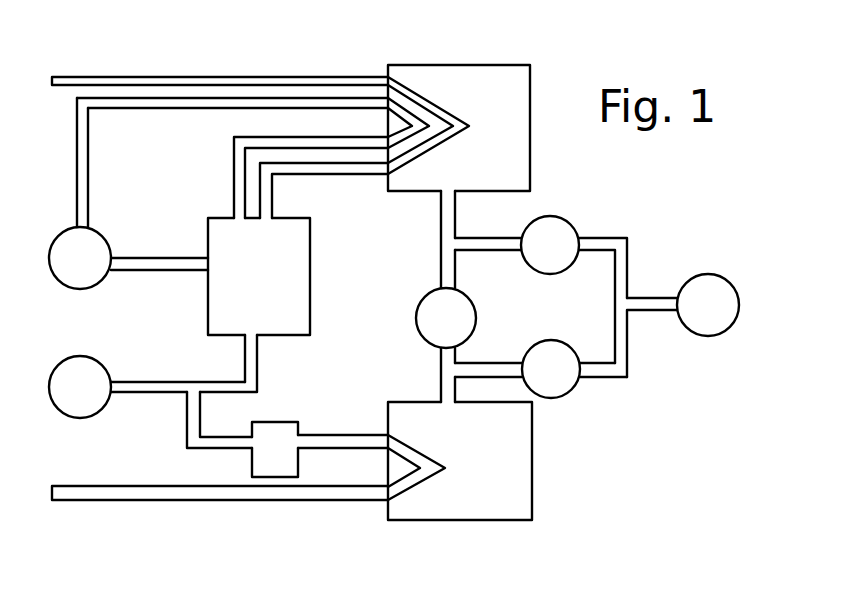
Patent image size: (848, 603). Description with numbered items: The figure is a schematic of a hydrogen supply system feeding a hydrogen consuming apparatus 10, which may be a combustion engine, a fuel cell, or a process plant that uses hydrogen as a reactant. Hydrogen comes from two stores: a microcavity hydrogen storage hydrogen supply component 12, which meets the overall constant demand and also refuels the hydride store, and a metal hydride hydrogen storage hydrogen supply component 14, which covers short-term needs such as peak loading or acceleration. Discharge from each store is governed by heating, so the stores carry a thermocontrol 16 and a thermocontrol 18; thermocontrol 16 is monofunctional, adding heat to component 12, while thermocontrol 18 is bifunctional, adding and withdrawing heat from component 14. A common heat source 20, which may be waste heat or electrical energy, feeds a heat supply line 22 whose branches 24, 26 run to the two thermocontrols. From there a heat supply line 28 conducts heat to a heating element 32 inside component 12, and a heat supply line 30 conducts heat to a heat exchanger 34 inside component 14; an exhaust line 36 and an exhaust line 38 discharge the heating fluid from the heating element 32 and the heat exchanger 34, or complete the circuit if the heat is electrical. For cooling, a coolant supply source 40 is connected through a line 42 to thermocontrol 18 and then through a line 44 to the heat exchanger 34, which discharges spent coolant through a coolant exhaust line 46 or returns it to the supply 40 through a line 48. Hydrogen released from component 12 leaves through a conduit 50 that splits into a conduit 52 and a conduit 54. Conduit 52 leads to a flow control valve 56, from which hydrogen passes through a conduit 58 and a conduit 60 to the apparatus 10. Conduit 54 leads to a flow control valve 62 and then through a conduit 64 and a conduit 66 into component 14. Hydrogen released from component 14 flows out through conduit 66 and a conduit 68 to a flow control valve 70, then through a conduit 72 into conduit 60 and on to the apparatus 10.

The hydrogen consuming apparatus 10 is at (718, 334).
The microcavity hydrogen storage hydrogen supply component 12 is at (527, 520).
The metal hydride hydrogen storage hydrogen supply component 14 is at (547, 50).
The thermocontrol 16 is at (294, 395).
The thermocontrol 18 is at (312, 304).
The heat source 20 is at (97, 415).
The heat supply line 22 is at (162, 382).
The branch 24 is at (200, 404).
The branch 26 is at (207, 380).
The heat supply line 28 is at (362, 434).
The heat supply line 30 is at (339, 178).
The heating element 32 is at (430, 478).
The heat exchanger 34 is at (438, 102).
The exhaust line 36 is at (280, 502).
The exhaust line 38 is at (214, 76).
The coolant supply source 40 is at (50, 258).
The line 42 is at (158, 272).
The line 44 is at (233, 180).
The coolant exhaust line 46 is at (184, 110).
The line 48 is at (92, 206).
The conduit 50 is at (442, 384).
The conduit 52 is at (512, 362).
The conduit 54 is at (440, 355).
The flow control valve 56 is at (560, 340).
The conduit 58 is at (632, 374).
The conduit 60 is at (664, 280).
The flow control valve 62 is at (418, 296).
The conduit 64 is at (455, 276).
The conduit 66 is at (455, 232).
The conduit 68 is at (508, 237).
The flow control valve 70 is at (576, 200).
The conduit 72 is at (607, 237).